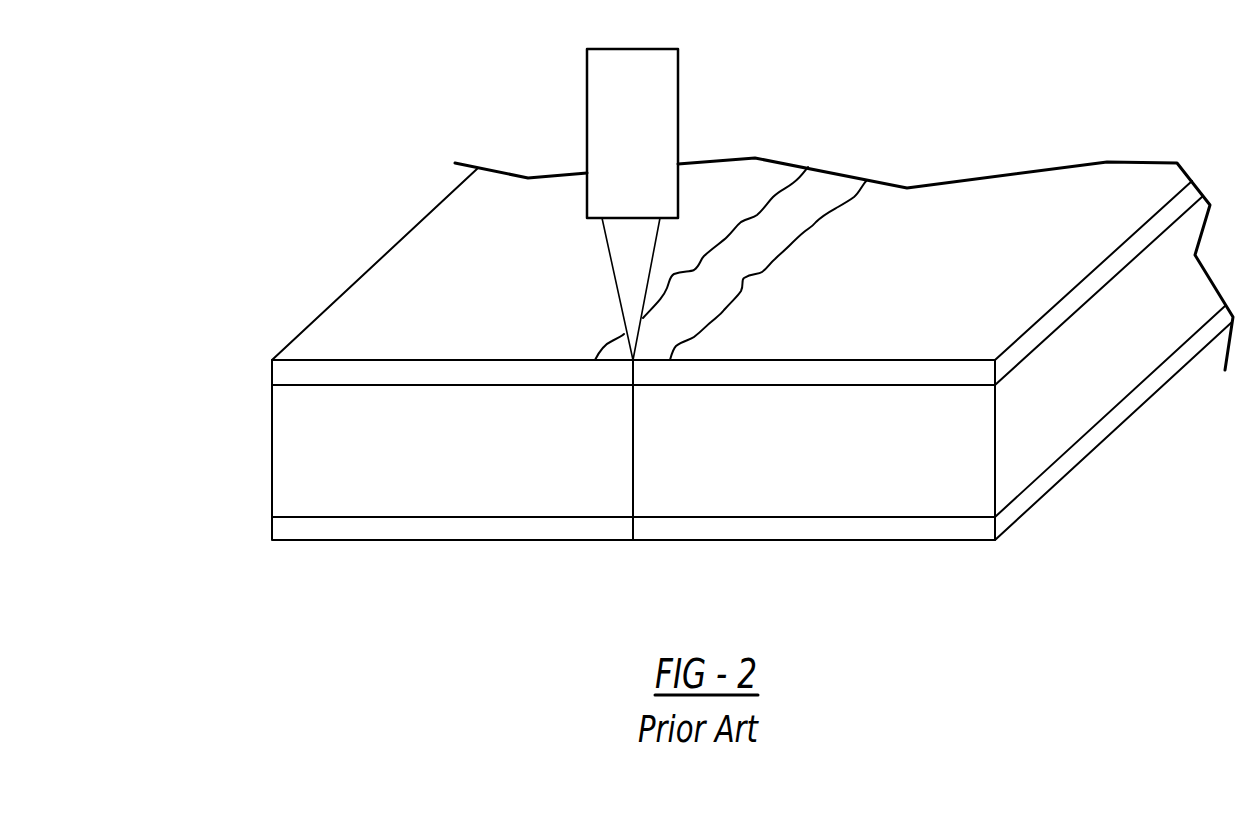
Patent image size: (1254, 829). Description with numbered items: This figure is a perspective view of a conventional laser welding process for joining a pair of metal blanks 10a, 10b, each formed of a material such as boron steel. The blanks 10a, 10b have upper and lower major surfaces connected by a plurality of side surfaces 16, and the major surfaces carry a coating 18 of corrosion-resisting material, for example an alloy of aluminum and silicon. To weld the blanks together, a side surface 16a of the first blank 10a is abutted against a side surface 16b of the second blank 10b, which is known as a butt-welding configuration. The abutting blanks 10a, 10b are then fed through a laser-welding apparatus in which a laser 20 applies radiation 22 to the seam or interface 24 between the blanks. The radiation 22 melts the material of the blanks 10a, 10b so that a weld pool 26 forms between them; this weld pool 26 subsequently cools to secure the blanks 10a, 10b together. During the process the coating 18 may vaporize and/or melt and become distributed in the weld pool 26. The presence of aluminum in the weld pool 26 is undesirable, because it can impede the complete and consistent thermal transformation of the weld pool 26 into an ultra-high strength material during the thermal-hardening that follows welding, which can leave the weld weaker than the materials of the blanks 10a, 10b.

The blank 10a is at (270, 441).
The blank 10b is at (997, 428).
The side surfaces 16 is at (270, 475).
The side surface 16a is at (633, 413).
The side surface 16b is at (633, 467).
The coating 18 is at (422, 373).
The laser 20 is at (610, 137).
The radiation 22 is at (657, 260).
The seam or interface 24 is at (638, 503).
The weld pool 26 is at (815, 192).